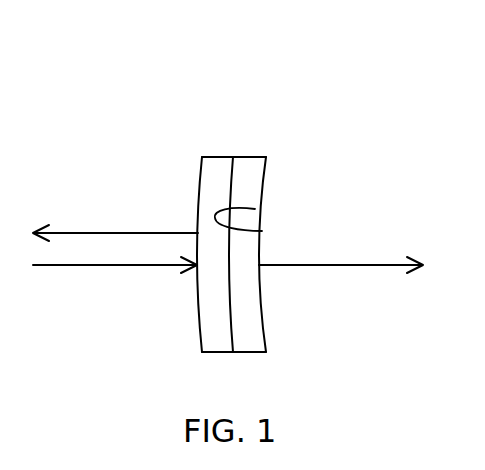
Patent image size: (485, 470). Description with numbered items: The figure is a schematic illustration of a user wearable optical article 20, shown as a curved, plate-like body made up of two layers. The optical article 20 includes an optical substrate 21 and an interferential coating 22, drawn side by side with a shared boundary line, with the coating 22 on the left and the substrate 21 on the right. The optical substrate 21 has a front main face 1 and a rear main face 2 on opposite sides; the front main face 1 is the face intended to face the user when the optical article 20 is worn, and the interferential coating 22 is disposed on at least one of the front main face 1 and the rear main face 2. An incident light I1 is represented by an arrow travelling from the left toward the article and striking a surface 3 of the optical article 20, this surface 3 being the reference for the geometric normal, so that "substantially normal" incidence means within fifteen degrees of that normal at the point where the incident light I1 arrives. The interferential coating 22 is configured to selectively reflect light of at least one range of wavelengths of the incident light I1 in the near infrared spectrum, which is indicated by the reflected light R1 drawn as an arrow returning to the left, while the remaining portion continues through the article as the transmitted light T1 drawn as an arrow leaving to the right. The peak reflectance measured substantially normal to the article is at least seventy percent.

The user wearable optical article 20 is at (249, 187).
The optical substrate 21 is at (314, 217).
The interferential coating 22 is at (174, 217).
The front main face 1 is at (262, 187).
The rear main face 2 is at (262, 231).
The surface 3 is at (197, 323).
The reflected light R1 is at (115, 218).
The incident light I1 is at (115, 279).
The transmitted light T1 is at (341, 281).